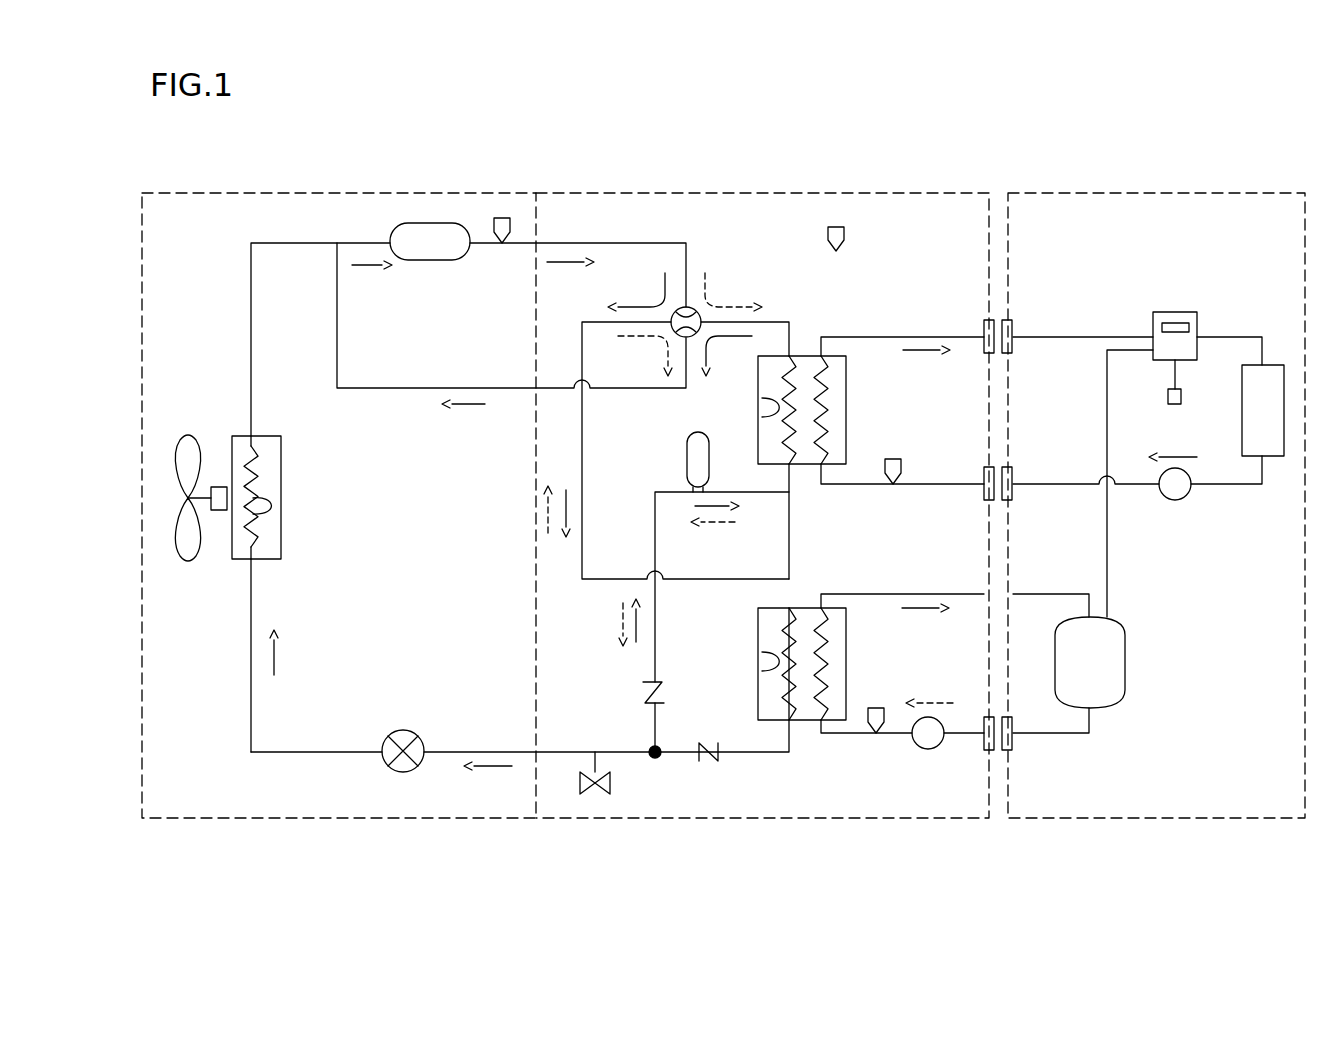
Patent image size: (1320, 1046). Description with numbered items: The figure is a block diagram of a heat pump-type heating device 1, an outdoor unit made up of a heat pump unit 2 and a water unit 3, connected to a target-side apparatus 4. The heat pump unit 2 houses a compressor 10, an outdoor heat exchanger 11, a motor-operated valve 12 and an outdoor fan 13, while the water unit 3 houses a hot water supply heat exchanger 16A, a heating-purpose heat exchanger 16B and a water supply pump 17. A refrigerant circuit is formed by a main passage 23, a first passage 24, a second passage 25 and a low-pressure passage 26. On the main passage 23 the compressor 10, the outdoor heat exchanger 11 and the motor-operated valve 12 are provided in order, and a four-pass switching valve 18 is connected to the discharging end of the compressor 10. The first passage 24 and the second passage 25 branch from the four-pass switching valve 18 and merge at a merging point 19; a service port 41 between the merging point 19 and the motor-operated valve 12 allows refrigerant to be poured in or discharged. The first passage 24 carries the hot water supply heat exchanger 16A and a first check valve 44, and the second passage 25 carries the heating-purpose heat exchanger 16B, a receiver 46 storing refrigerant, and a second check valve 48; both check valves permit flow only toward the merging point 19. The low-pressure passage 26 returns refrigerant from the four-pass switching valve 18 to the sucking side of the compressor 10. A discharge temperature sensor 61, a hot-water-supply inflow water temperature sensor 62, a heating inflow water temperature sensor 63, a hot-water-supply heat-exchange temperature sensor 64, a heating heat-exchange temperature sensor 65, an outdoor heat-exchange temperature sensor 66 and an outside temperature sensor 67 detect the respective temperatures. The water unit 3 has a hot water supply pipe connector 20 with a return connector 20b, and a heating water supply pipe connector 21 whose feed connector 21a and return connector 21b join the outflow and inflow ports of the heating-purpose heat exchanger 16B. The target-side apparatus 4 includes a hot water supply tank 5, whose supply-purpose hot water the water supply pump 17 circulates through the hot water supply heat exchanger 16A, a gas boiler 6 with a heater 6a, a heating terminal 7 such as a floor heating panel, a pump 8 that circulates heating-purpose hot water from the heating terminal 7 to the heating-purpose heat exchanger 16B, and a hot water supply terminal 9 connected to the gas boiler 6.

The heat pump-type heating device 1 is at (176, 172).
The heat pump unit 2 is at (310, 830).
The water unit 3 is at (688, 832).
The target-side apparatus 4 is at (1108, 832).
The hot water supply tank 5 is at (1125, 665).
The gas boiler 6 is at (1197, 322).
The heater 6a is at (1170, 312).
The heating terminal 7 is at (1284, 370).
The pump 8 is at (1175, 500).
The hot water supply terminal 9 is at (1168, 397).
The compressor 10 is at (430, 262).
The outdoor heat exchanger 11 is at (281, 472).
The motor-operated valve 12 is at (403, 730).
The outdoor fan 13 is at (186, 436).
The hot water supply heat exchanger 16A is at (847, 645).
The heating-purpose heat exchanger 16B is at (847, 392).
The water supply pump 17 is at (928, 750).
The four-pass switching valve 18 is at (686, 307).
The merging point 19 is at (655, 758).
The hot water supply pipe connector 20 is at (955, 663).
The return connector 20b is at (1012, 740).
The heating water supply pipe connector 21 is at (990, 410).
The feed connector 21a is at (984, 325).
The return connector 21b is at (1012, 490).
The main passage 23 is at (251, 305).
The first passage 24 is at (582, 452).
The second passage 25 is at (789, 322).
The low-pressure passage 26 is at (388, 390).
The service port 41 is at (580, 795).
The first check valve 44 is at (706, 762).
The receiver 46 is at (687, 455).
The second check valve 48 is at (665, 692).
The discharge temperature sensor 61 is at (502, 216).
The hot-water-supply inflow water temperature sensor 62 is at (878, 707).
The heating inflow water temperature sensor 63 is at (894, 458).
The hot-water-supply heat-exchange temperature sensor 64 is at (762, 662).
The heating heat-exchange temperature sensor 65 is at (762, 408).
The outdoor heat-exchange temperature sensor 66 is at (270, 505).
The outside temperature sensor 67 is at (848, 236).